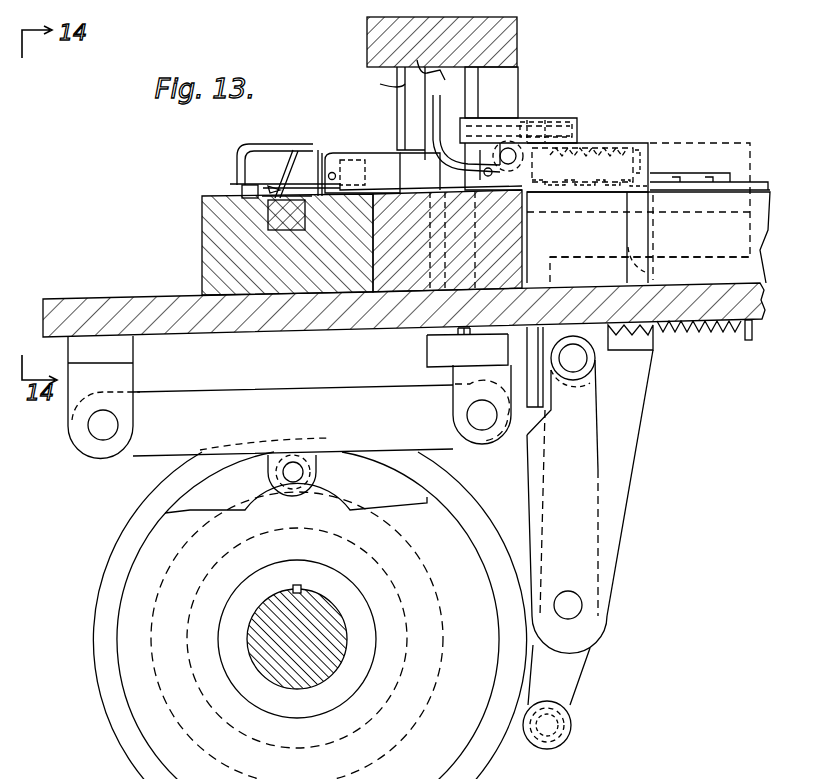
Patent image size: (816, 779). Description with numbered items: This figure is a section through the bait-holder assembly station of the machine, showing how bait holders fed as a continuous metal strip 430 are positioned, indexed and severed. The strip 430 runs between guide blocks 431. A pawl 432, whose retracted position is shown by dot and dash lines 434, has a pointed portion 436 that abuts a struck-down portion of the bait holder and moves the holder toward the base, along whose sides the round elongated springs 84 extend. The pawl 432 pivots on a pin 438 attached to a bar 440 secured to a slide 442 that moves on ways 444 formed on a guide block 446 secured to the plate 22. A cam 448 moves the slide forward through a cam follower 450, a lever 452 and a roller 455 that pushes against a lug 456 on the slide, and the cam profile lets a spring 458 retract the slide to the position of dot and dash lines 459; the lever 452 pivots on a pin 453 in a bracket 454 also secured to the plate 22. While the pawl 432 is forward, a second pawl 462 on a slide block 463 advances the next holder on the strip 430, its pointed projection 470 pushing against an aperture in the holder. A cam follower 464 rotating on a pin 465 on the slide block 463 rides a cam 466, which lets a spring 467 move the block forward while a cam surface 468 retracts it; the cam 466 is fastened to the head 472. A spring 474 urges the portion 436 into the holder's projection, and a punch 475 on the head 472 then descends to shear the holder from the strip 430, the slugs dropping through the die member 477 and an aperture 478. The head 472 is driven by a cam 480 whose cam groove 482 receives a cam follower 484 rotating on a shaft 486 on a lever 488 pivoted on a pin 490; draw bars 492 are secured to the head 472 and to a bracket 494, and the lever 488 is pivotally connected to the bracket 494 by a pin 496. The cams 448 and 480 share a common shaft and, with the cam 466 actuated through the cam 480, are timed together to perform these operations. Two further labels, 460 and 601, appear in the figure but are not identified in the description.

The plate 22 is at (758, 323).
The round elongated springs 84 is at (237, 182).
The strip 430 is at (733, 177).
The guide blocks 431 is at (717, 172).
The pawl 432 is at (318, 150).
The dot and dash lines 434 is at (374, 153).
The pointed portion 436 is at (305, 212).
The pin 438 is at (333, 168).
The bar 440 is at (368, 152).
The slide 442 is at (655, 182).
The ways 444 is at (717, 256).
The guide block 446 is at (763, 190).
The cam 448 is at (497, 760).
The cam follower 450 is at (573, 725).
The lever 452 is at (593, 647).
The pin 453 is at (582, 605).
The bracket 454 is at (627, 510).
The roller 455 is at (603, 400).
The lug 456 is at (535, 430).
The spring 458 is at (725, 338).
The dot and dash lines 459 is at (656, 270).
The latch lever 460 is at (284, 190).
The pawl 462 is at (493, 92).
The slide block 463 is at (497, 130).
The cam follower 464 is at (562, 120).
The pin 465 is at (566, 126).
The cam 466 is at (530, 84).
The spring 467 is at (616, 145).
The cam surface 468 is at (536, 112).
The pointed projection 470 is at (437, 118).
The head 472 is at (365, 38).
The spring 474 is at (354, 153).
The punch 475 is at (382, 84).
The die member 477 is at (450, 214).
The aperture 478 is at (375, 269).
The cam 480 is at (147, 500).
The cam groove 482 is at (210, 462).
The cam follower 484 is at (272, 455).
The shaft 486 is at (293, 462).
The lever 488 is at (192, 392).
The pin 490 is at (80, 438).
The draw bars 492 is at (428, 70).
The bracket 494 is at (430, 366).
The pin 496 is at (480, 444).
The hub 601 is at (323, 687).